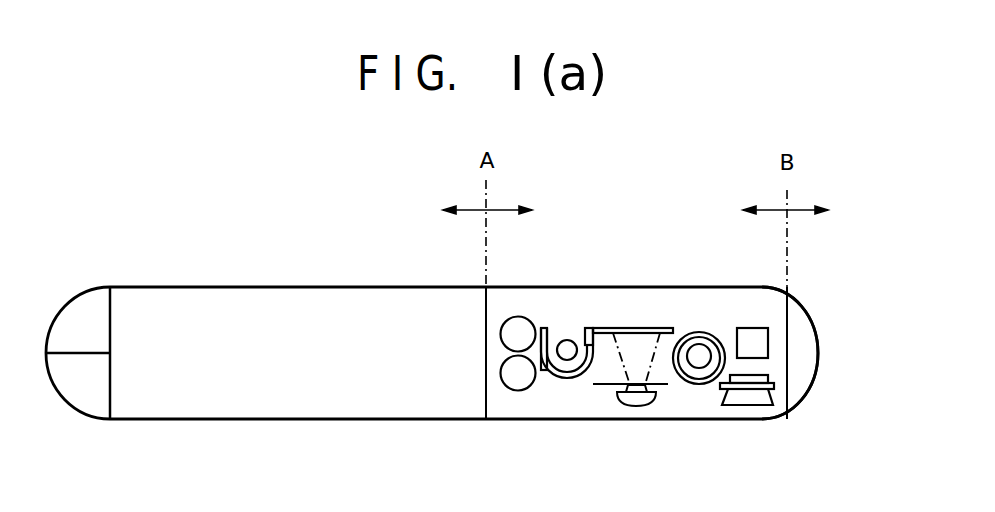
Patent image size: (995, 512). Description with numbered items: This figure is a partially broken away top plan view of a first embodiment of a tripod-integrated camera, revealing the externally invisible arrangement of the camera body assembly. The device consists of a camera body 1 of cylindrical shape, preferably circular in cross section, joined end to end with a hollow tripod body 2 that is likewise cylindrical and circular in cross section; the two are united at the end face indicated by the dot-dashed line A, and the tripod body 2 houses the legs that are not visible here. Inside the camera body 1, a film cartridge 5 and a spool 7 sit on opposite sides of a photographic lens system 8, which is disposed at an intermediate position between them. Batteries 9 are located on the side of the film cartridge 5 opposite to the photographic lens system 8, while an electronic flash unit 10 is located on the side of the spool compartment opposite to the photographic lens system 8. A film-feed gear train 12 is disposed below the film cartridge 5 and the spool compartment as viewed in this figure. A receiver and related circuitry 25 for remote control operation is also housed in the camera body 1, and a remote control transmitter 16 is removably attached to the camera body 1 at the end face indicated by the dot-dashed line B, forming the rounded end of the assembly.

The camera body 1 is at (617, 312).
The tripod body 2 is at (290, 300).
The film cartridge 5 is at (560, 330).
The spool 7 is at (700, 350).
The photographic lens system 8 is at (635, 406).
The batteries 9 is at (518, 332).
The electronic flash unit 10 is at (757, 403).
The film-feed gear train 12 is at (668, 384).
The remote control transmitter 16 is at (802, 350).
The receiver and related circuitry 25 is at (752, 328).